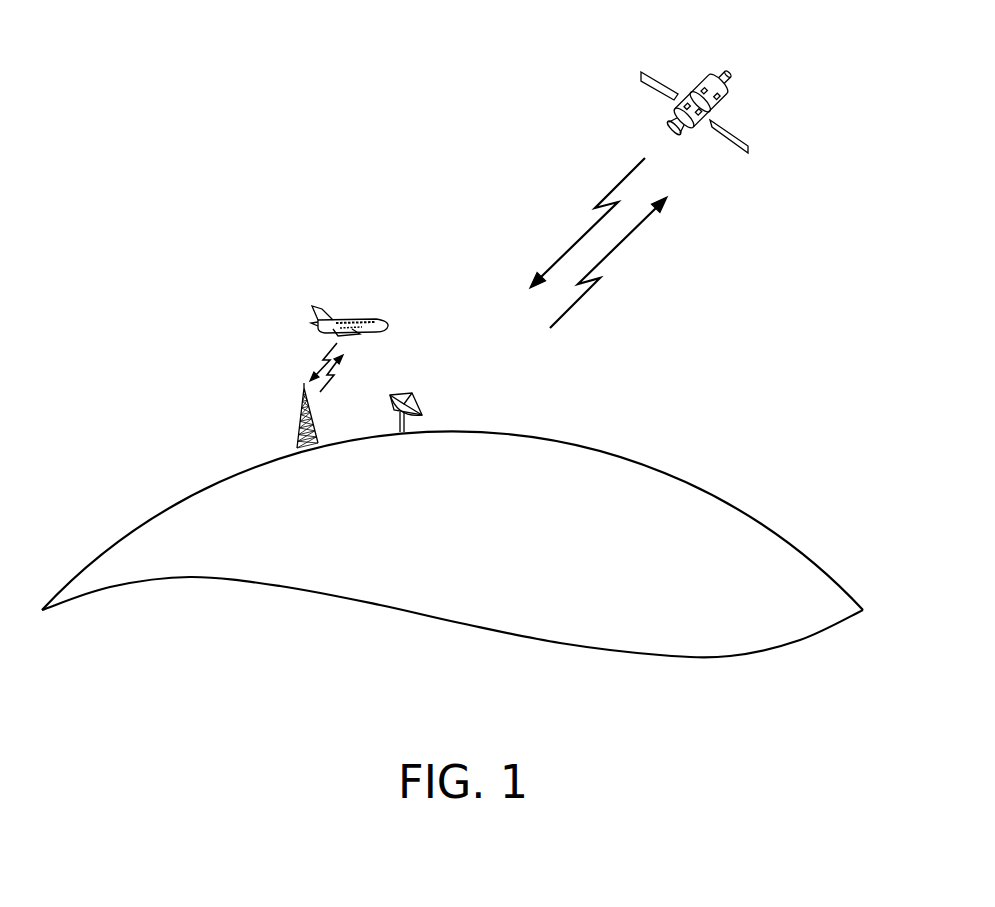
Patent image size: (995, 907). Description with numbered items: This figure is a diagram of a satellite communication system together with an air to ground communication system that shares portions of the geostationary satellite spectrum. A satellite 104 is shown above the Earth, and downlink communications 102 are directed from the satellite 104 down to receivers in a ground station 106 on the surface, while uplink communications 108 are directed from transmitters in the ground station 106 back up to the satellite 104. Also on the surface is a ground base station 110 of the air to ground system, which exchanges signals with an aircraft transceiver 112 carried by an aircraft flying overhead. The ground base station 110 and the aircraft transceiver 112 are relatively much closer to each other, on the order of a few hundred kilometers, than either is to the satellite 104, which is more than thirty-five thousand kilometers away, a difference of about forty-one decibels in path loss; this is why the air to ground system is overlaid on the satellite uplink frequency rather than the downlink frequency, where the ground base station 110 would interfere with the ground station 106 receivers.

The downlink communications 102 is at (590, 227).
The satellite 104 is at (661, 80).
The ground station 106 is at (423, 411).
The uplink communications 108 is at (622, 242).
The ground base station 110 is at (227, 488).
The aircraft transceiver 112 is at (310, 313).